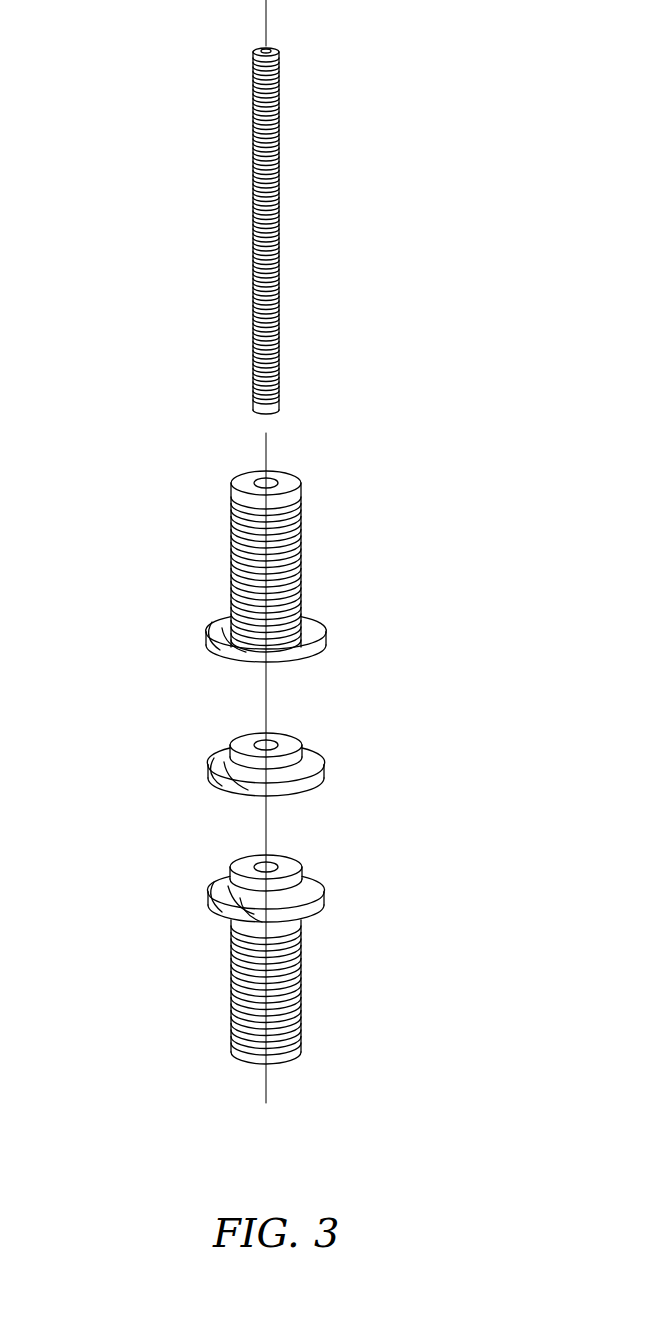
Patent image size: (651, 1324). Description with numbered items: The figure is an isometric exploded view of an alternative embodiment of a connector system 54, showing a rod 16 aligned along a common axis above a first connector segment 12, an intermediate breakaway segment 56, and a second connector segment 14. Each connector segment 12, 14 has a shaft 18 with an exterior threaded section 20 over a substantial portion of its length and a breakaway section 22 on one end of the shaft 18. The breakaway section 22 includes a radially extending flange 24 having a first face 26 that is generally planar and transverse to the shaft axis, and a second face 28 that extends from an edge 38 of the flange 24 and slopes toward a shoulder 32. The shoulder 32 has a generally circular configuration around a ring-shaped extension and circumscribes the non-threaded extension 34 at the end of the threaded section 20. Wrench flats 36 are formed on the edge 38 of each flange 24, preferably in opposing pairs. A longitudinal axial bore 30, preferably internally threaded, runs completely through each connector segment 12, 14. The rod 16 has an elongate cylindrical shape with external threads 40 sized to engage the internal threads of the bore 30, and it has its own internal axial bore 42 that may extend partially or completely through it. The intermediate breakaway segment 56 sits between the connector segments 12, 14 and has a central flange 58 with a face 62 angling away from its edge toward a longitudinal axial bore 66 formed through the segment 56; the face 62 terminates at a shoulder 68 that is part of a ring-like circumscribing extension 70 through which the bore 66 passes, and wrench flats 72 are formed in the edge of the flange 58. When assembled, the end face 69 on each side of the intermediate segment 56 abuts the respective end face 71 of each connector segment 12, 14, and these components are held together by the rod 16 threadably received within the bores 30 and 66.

The connector system 54 is at (73, 437).
The external threads 40 is at (283, 183).
The internal axial bore 42 is at (272, 48).
The rod 16 is at (278, 413).
The first connector segment 12 is at (228, 484).
The second connector segment 14 is at (228, 1055).
The shaft 18 is at (305, 532).
The exterior threaded section 20 is at (305, 556).
The breakaway section 22 is at (328, 631).
The flange 24 is at (313, 657).
The first face 26 is at (218, 625).
The second face 28 is at (215, 880).
The longitudinal axial bore 30 is at (275, 483).
The shoulder 32 is at (245, 933).
The non-threaded extension 34 is at (238, 856).
The wrench flats 36 is at (220, 645).
The edge 38 is at (282, 672).
The intermediate breakaway segment 56 is at (188, 748).
The central flange 58 is at (330, 762).
The face 62 is at (300, 778).
The longitudinal axial bore 66 is at (283, 748).
The shoulder 68 is at (238, 800).
The end face 69 is at (248, 738).
The ring-like circumscribing extension 70 is at (238, 742).
The end face 71 is at (300, 858).
The wrench flats 72 is at (228, 782).